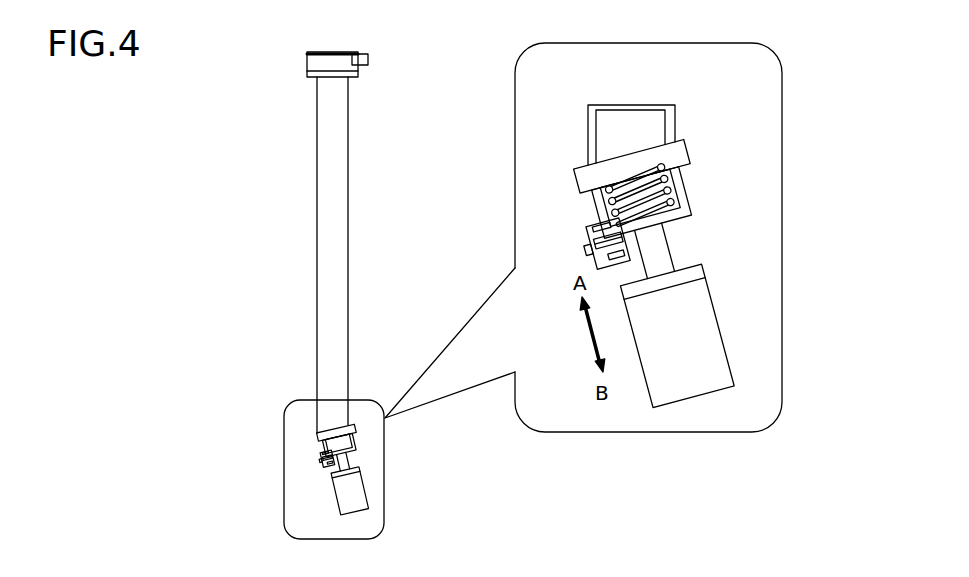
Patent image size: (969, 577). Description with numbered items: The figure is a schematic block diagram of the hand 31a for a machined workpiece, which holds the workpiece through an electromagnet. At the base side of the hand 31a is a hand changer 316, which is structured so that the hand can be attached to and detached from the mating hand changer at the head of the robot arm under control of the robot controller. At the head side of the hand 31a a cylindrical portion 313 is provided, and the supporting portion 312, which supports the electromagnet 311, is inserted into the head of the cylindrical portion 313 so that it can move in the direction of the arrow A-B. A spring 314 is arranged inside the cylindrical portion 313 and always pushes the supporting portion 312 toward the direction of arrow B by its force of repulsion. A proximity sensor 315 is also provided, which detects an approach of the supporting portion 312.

The electromagnet 311 is at (646, 388).
The supporting portion 312 is at (673, 257).
The cylindrical portion 313 is at (603, 207).
The spring 314 is at (673, 192).
The proximity sensor 315 is at (586, 242).
The hand changer 316 is at (306, 60).
The hand for a machined workpiece 31a is at (317, 246).